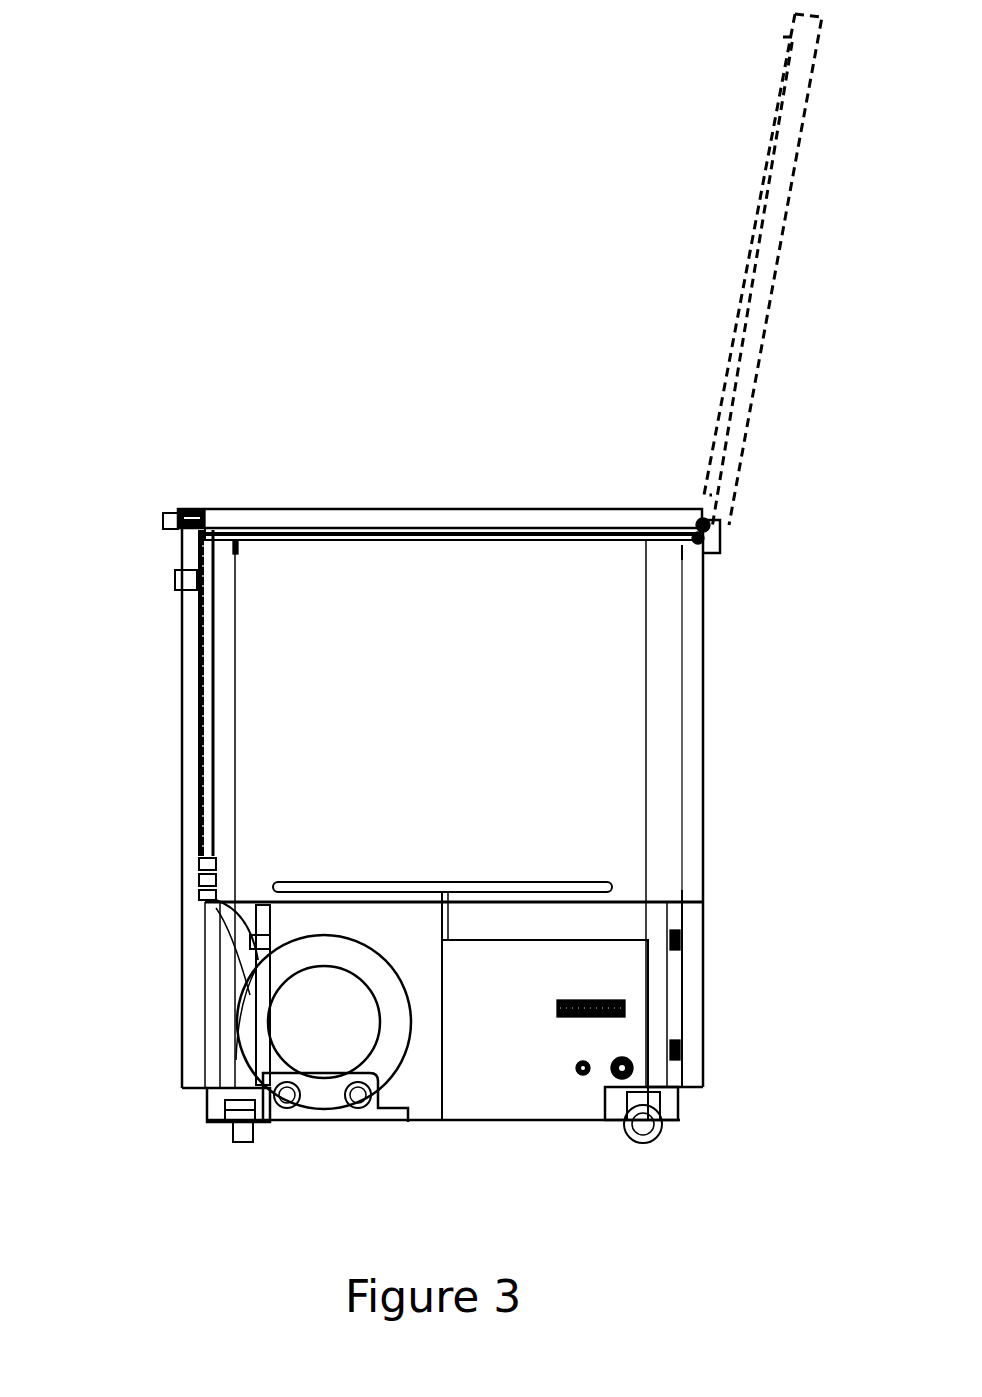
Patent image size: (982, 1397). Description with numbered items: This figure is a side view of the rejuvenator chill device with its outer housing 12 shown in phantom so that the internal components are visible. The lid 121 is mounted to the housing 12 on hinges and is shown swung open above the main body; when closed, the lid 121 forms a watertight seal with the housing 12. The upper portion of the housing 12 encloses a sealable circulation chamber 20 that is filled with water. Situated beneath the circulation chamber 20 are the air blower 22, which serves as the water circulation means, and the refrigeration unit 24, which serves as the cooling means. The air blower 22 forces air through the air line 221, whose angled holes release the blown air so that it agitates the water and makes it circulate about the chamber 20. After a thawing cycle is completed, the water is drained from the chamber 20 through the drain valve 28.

The outer housing 12 is at (226, 572).
The circulation chamber 20 is at (463, 735).
The air blower 22 is at (305, 958).
The refrigeration unit 24 is at (582, 953).
The drain valve 28 is at (260, 987).
The lid 121 is at (748, 316).
The air line 221 is at (448, 883).